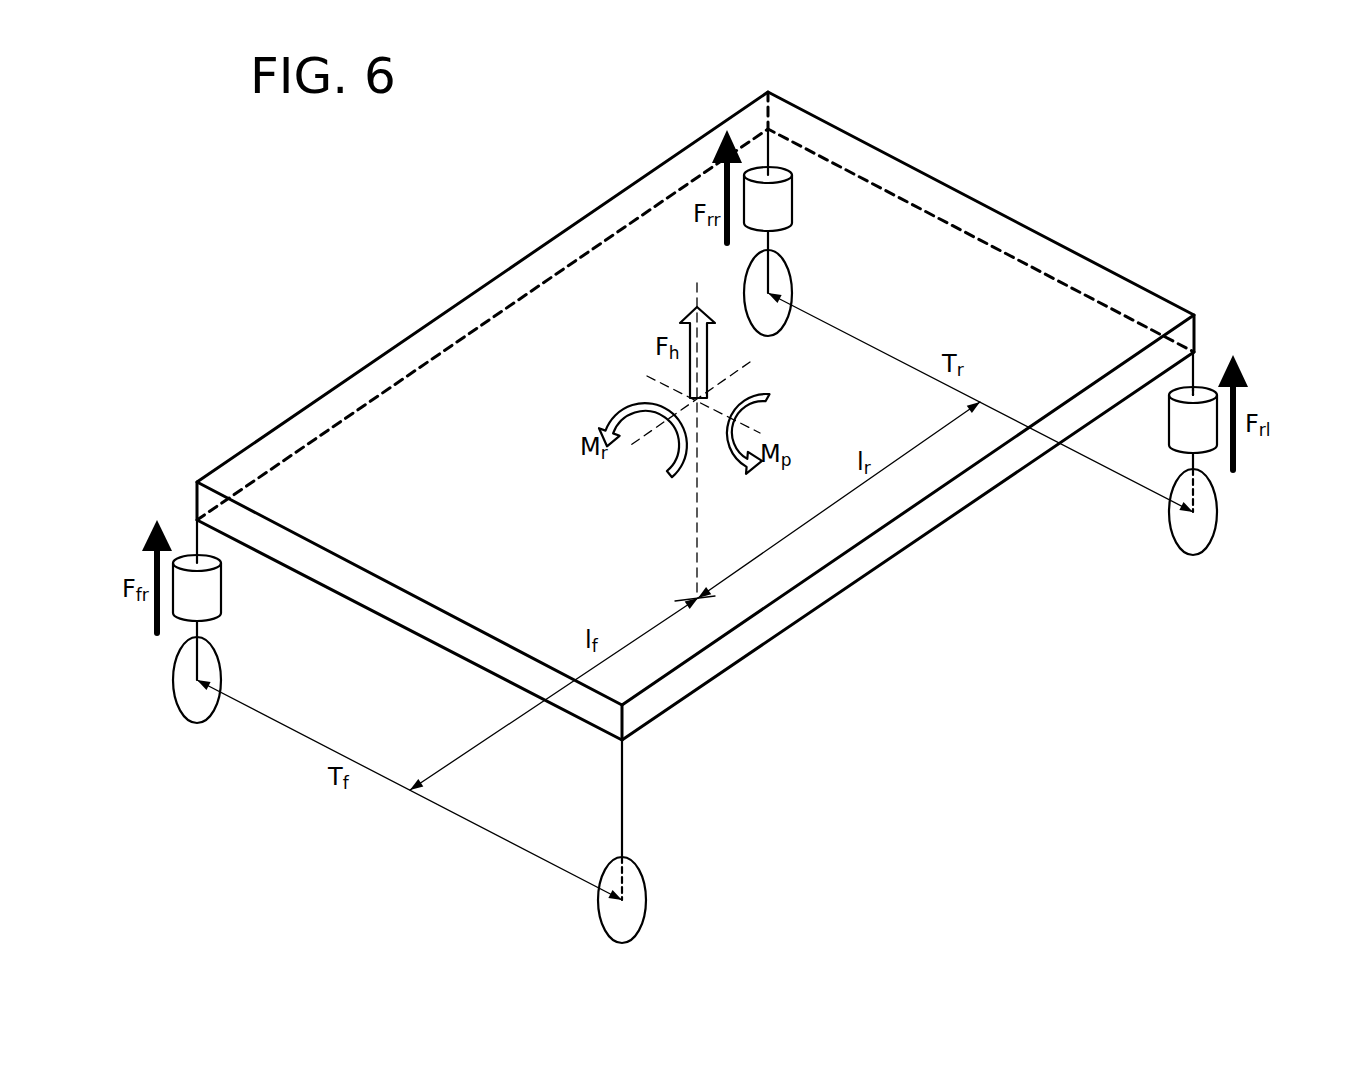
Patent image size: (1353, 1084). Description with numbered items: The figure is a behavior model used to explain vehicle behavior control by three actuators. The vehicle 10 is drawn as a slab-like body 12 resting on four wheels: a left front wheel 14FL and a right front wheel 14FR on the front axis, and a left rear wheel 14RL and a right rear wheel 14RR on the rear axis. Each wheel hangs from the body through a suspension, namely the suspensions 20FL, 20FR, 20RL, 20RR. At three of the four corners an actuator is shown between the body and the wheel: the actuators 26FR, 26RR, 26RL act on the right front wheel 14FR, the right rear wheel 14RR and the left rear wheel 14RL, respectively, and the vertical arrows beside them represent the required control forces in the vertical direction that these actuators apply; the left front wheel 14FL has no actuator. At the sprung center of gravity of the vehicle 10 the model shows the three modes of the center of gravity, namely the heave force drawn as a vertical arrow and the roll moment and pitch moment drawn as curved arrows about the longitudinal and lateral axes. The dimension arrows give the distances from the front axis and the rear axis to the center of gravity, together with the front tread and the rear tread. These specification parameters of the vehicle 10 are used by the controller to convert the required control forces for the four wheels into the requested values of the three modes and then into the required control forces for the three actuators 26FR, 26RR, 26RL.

The vehicle 10 is at (323, 345).
The vehicle body 12 is at (520, 258).
The right front wheel 14FR is at (222, 662).
The left front wheel 14FL is at (645, 870).
The right rear wheel 14RR is at (790, 268).
The left rear wheel 14RL is at (1172, 533).
The suspension 20FR is at (232, 578).
The suspension 20FL is at (640, 805).
The suspension 20RR is at (804, 185).
The suspension 20RL is at (1150, 420).
The actuator 26FR is at (190, 555).
The actuator 26RR is at (760, 162).
The actuator 26RL is at (1200, 382).